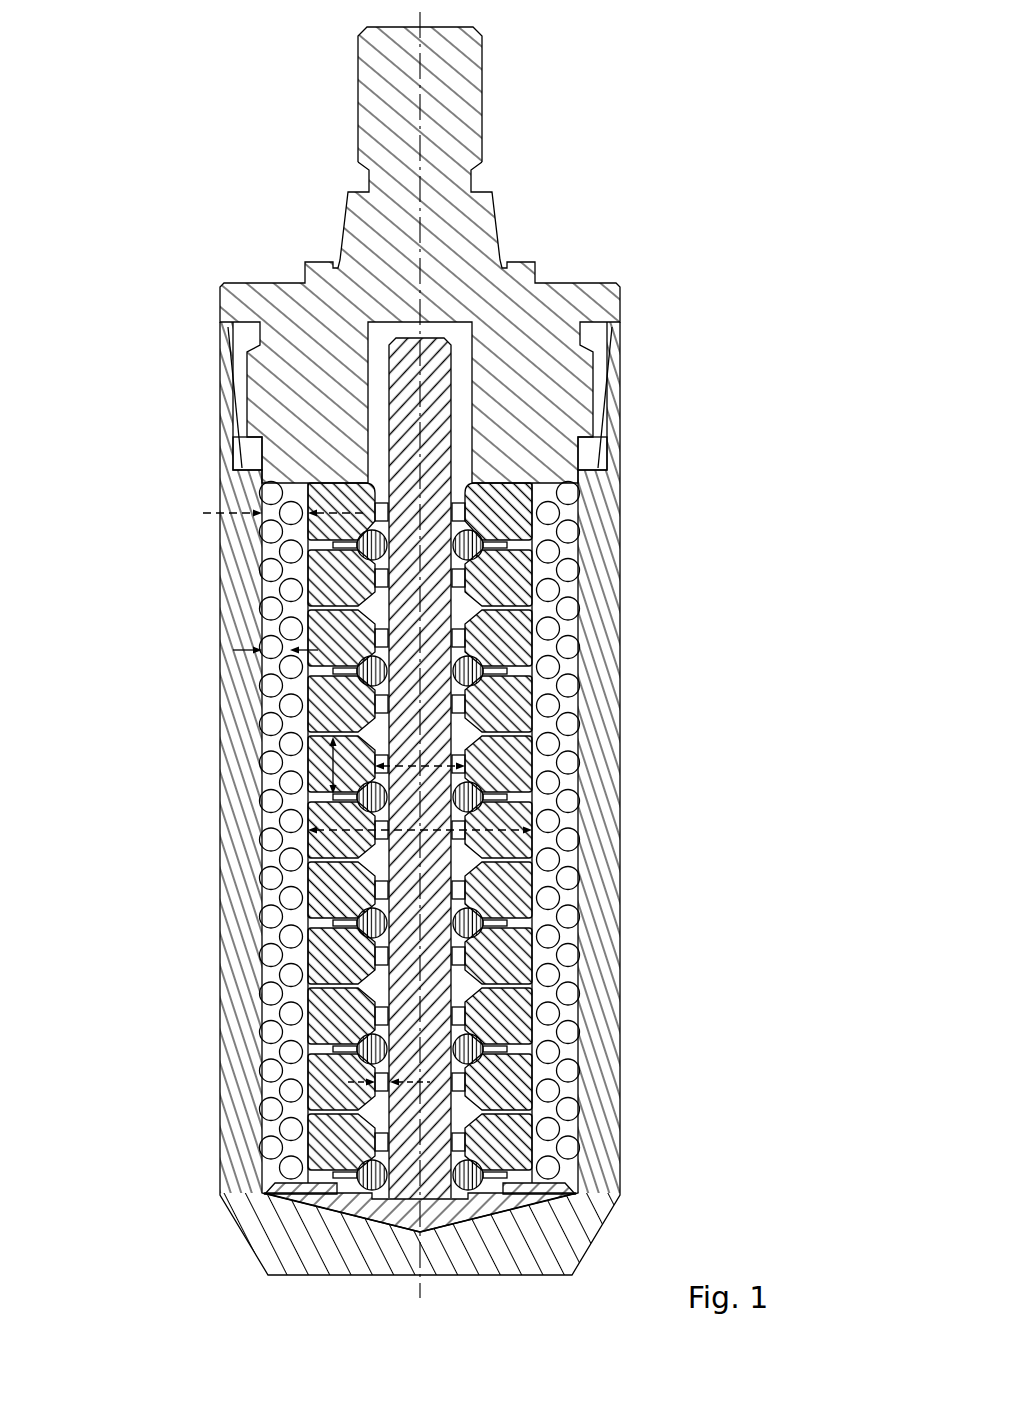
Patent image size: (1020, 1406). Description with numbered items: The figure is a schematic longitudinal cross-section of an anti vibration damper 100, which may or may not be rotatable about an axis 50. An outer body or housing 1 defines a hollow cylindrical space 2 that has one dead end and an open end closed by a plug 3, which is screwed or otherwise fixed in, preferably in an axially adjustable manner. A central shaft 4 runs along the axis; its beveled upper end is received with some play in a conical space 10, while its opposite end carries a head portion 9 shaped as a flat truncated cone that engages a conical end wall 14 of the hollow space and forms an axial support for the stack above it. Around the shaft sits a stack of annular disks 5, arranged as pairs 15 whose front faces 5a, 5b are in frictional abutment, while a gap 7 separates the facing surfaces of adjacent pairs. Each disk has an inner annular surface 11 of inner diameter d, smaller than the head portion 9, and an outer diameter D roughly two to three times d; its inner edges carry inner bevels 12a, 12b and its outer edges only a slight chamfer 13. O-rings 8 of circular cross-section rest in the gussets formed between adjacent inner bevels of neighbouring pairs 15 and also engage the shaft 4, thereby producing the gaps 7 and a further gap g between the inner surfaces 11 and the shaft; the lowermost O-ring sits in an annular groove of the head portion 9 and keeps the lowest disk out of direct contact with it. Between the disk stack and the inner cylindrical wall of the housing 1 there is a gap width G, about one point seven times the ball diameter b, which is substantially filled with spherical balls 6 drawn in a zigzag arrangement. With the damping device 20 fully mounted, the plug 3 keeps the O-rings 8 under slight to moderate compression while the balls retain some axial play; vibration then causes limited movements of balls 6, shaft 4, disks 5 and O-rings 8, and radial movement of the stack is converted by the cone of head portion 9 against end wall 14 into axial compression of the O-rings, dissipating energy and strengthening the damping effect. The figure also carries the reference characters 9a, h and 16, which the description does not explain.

The anti vibration damper 100 is at (640, 242).
The axis 50 is at (423, 93).
The plug 3 is at (545, 383).
The conical space 10 is at (397, 322).
The housing 1 is at (598, 655).
The central shaft 4 is at (430, 395).
The conical end wall 14 is at (412, 1235).
The head portion 9 is at (330, 1198).
The bottom plate chamfer 9a is at (515, 1218).
The spherical balls 6 is at (272, 612).
The hollow cylindrical space 2 is at (545, 487).
The gap width G is at (272, 513).
The ball diameter b is at (272, 650).
The damping device 20 is at (505, 476).
The annular disks 5 is at (512, 577).
The inner annular surface 11 is at (378, 703).
The segment height h is at (330, 740).
The front face 5a is at (495, 738).
The front face 5b is at (560, 805).
The inner diameter d is at (466, 767).
The pairs of disks 15 is at (580, 807).
The outer diameter D is at (305, 830).
The gaps 7 is at (347, 925).
The O-rings 8 is at (478, 922).
The inner bevel 12b is at (470, 990).
The inner bevel 12a is at (365, 1050).
The chamfer 13 is at (540, 1052).
The gap g is at (378, 1088).
The lower roller 16 is at (493, 1185).